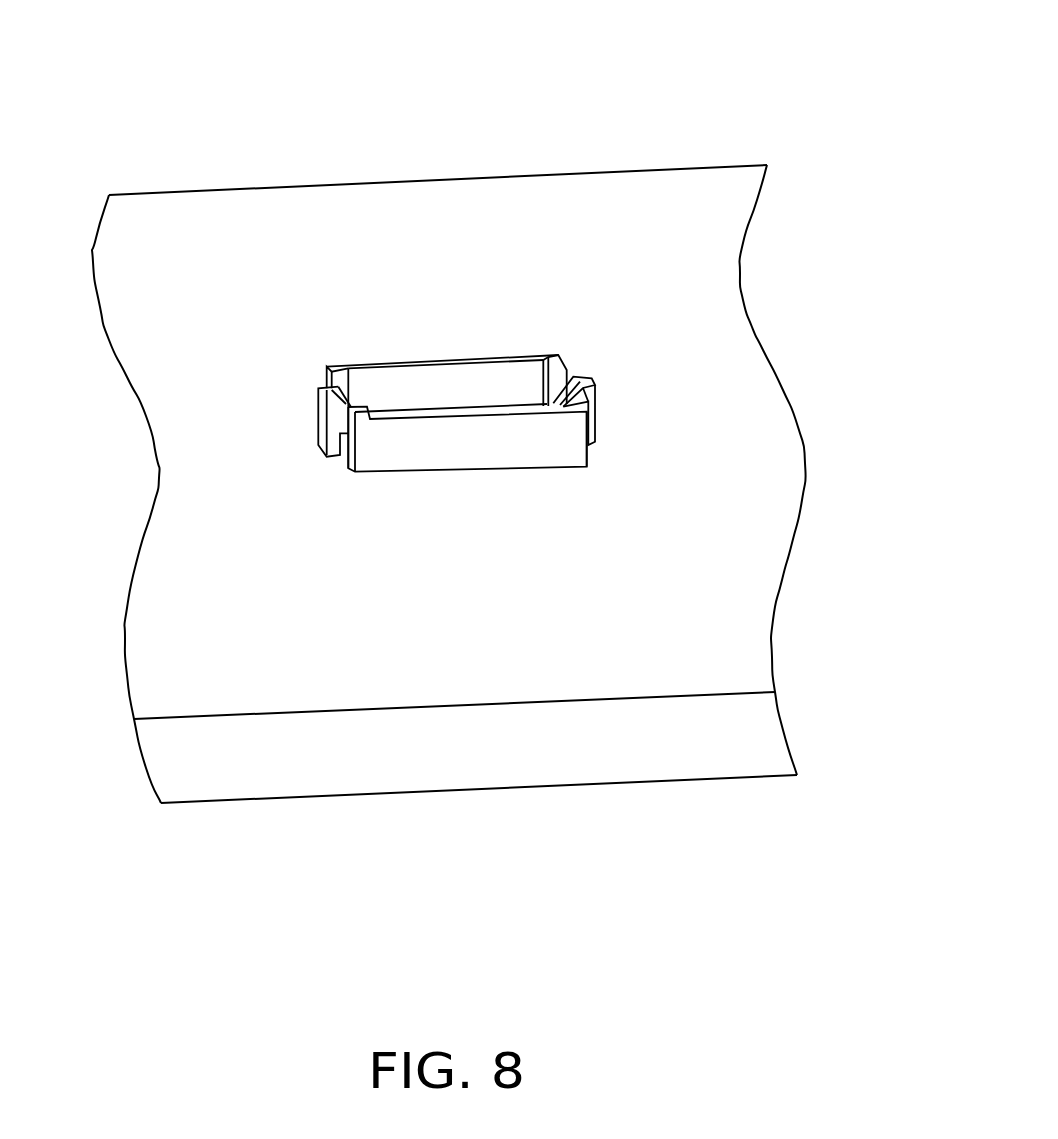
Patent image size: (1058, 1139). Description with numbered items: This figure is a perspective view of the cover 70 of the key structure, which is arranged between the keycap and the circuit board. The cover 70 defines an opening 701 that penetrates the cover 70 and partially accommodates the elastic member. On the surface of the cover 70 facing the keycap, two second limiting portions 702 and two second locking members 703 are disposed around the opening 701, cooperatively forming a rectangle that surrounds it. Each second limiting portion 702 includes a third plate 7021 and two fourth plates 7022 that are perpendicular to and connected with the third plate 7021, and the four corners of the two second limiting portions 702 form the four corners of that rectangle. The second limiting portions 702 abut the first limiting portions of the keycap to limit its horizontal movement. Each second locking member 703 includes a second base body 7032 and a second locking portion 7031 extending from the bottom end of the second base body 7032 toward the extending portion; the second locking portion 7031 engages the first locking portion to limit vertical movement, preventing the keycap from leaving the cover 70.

The cover 70 is at (470, 41).
The opening 701 is at (401, 393).
The second limiting portion 702 is at (436, 358).
The third plate 7021 is at (472, 438).
The fourth plate 7022 is at (358, 412).
The second locking member 703 is at (335, 417).
The second locking portion 7031 is at (587, 388).
The second base body 7032 is at (588, 398).